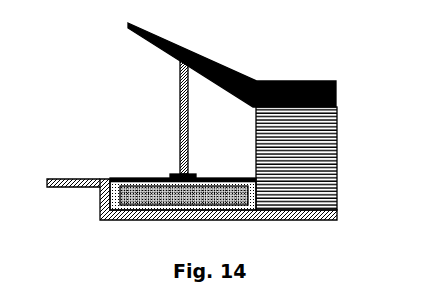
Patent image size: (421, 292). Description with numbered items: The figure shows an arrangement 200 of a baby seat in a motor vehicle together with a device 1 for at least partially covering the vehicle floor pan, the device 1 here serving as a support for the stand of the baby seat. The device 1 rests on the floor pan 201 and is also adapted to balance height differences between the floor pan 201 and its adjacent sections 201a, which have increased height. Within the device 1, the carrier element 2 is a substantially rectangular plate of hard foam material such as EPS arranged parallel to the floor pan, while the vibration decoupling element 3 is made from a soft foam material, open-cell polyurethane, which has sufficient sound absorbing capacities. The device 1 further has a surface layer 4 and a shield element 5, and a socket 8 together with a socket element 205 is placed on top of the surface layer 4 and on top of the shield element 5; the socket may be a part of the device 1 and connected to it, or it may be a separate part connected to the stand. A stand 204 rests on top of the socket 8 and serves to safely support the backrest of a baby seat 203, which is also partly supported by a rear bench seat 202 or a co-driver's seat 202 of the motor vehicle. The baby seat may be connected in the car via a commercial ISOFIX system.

The arrangement 200 is at (88, 94).
The floor pan 201 is at (182, 221).
The adjacent sections of the floor pan 201a is at (80, 178).
The rear bench seat 202 is at (337, 165).
The baby seat 203 is at (243, 70).
The stand 204 is at (180, 85).
The contact pad 205 is at (177, 174).
The socket 8 is at (163, 147).
The device 1 is at (231, 177).
The carrier element 2 is at (140, 181).
The vibration decoupling element 3 is at (120, 179).
The surface layer 4 is at (133, 178).
The shield element 5 is at (152, 180).